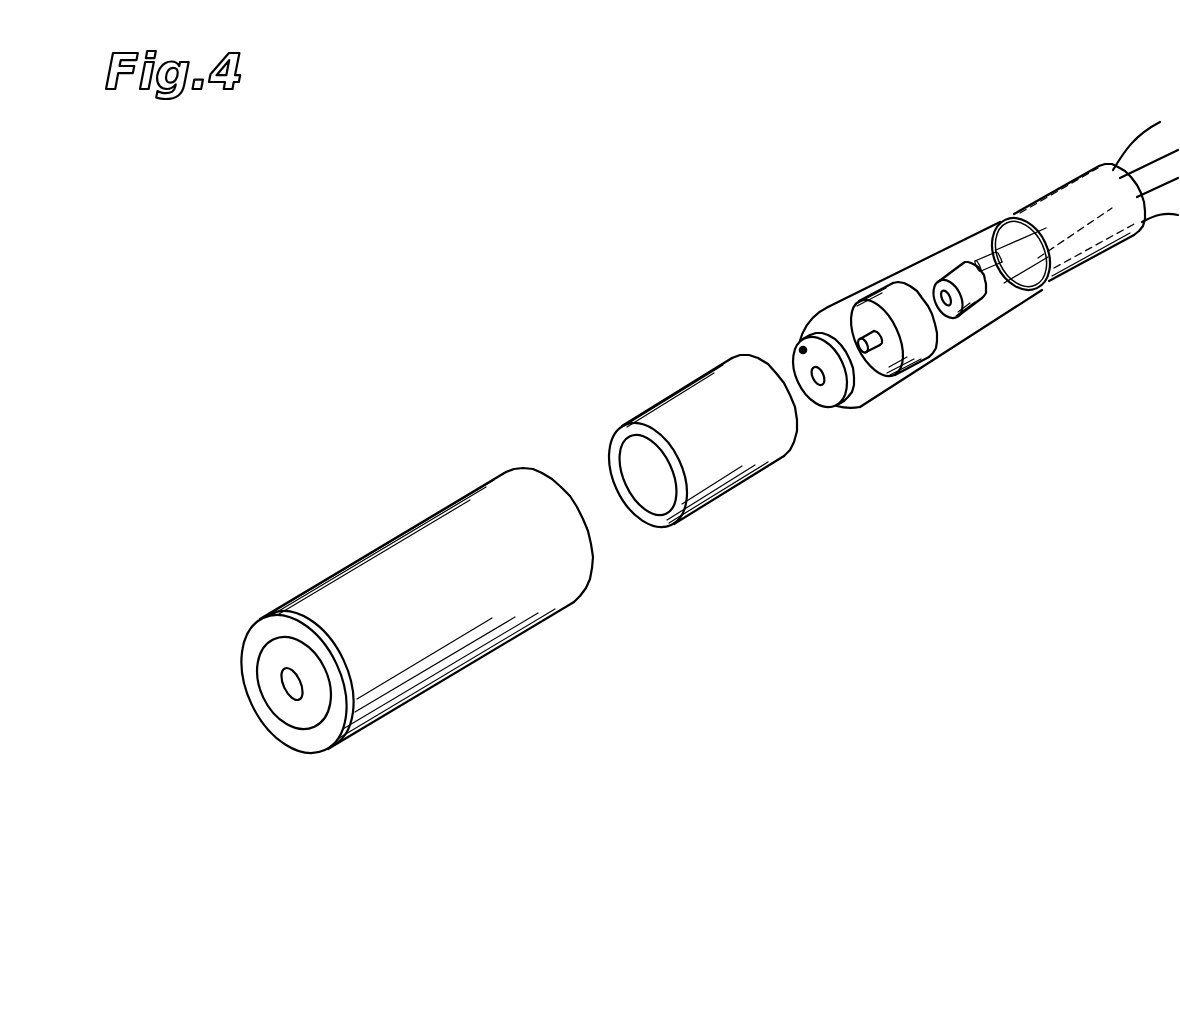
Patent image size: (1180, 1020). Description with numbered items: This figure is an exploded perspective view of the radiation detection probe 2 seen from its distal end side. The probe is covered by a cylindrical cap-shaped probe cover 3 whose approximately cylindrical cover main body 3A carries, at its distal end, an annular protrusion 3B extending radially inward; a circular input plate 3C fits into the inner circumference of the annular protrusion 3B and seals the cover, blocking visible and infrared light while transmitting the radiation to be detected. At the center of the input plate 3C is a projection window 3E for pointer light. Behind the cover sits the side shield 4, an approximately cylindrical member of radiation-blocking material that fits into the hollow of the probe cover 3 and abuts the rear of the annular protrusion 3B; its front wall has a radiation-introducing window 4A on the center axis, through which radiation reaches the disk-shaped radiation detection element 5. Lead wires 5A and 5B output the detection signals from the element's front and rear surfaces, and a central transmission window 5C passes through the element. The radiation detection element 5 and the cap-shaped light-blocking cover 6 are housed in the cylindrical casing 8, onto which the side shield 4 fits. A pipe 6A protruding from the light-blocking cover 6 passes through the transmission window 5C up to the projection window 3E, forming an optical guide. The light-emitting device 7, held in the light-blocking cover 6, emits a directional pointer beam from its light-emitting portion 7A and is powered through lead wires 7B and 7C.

The radiation detection probe 2 is at (721, 198).
The probe cover 3 is at (340, 561).
The cover main body 3A is at (416, 530).
The annular protrusion 3B is at (247, 650).
The input plate 3C is at (304, 714).
The projection window 3E is at (293, 690).
The side shield 4 is at (676, 396).
The radiation-introducing window 4A is at (645, 495).
The radiation detection element 5 is at (823, 412).
The lead wire 5A is at (828, 308).
The lead wire 5B is at (862, 398).
The transmission window 5C is at (812, 372).
The light-blocking cover 6 is at (887, 290).
The pipe 6A is at (880, 355).
The light-emitting device 7 is at (980, 312).
The light-emitting portion 7A is at (937, 282).
The lead wire 7B is at (998, 223).
The lead wire 7C is at (1043, 293).
The casing 8 is at (1052, 193).